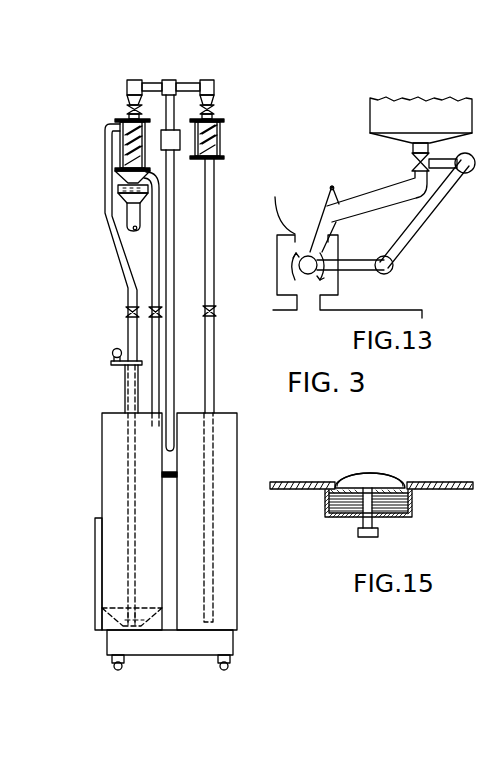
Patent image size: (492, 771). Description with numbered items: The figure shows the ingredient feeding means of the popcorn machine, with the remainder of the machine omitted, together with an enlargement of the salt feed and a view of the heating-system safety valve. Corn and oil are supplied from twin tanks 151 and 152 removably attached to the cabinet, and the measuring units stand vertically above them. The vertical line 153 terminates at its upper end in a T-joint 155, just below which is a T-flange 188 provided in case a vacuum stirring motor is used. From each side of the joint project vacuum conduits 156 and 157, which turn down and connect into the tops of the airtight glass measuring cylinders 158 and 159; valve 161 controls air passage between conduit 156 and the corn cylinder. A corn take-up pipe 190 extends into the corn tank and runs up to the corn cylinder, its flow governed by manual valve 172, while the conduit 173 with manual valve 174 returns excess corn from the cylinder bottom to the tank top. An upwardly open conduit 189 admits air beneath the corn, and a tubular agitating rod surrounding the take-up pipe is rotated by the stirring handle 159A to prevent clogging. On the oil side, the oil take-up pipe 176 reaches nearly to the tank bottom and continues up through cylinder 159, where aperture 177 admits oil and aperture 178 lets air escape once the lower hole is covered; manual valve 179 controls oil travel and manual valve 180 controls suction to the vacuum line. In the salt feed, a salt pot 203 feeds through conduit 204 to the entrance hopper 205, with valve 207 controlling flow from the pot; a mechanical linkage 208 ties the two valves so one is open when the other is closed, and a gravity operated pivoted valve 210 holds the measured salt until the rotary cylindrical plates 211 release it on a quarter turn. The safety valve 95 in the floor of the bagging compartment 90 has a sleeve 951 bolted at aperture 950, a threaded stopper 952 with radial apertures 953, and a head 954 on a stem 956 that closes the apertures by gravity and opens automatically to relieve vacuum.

In FIG. 3, the corn tank 151 is at (122, 548).
In FIG. 3, the oil tank 152 is at (222, 546).
In FIG. 3, the vertical line 153 is at (168, 245).
In FIG. 3, the T-joint 155 is at (173, 84).
In FIG. 3, the vacuum conduit 156 is at (152, 82).
In FIG. 3, the vacuum conduit 157 is at (192, 86).
In FIG. 3, the corn measuring cylinder 158 is at (125, 147).
In FIG. 3, the oil measuring cylinder 159 is at (221, 136).
In FIG. 3, the stirring handle 159A is at (116, 364).
In FIG. 3, the valve 161 is at (128, 103).
In FIG. 3, the manual valve 172 is at (127, 313).
In FIG. 3, the conduit 173 is at (152, 283).
In FIG. 3, the manual valve 174 is at (158, 312).
In FIG. 3, the oil take-up pipe 176 is at (209, 262).
In FIG. 3, the aperture 177 is at (218, 160).
In FIG. 3, the aperture 178 is at (221, 122).
In FIG. 3, the manual valve 179 is at (216, 311).
In FIG. 3, the manual valve 180 is at (211, 108).
In FIG. 3, the T-flange 188 is at (170, 151).
In FIG. 3, the upwardly open conduit 189 is at (100, 539).
In FIG. 3, the corn take-up pipe 190 is at (107, 218).
In FIG. 13, the salt pot 203 is at (427, 108).
In FIG. 13, the conduit 204 is at (370, 193).
In FIG. 13, the entrance hopper 205 is at (266, 236).
In FIG. 13, the valve 207 is at (413, 160).
In FIG. 13, the mechanical linkage 208 is at (428, 270).
In FIG. 13, the gravity operated pivoted valve 210 is at (323, 207).
In FIG. 13, the cylindrical plates 211 is at (333, 259).
In FIG. 15, the bagging compartment 90 is at (297, 482).
In FIG. 15, the valve 95 is at (355, 466).
In FIG. 15, the aperture 950 is at (407, 473).
In FIG. 15, the sleeve 951 is at (418, 494).
In FIG. 15, the stopper 952 is at (410, 514).
In FIG. 15, the radial apertures 953 is at (343, 496).
In FIG. 15, the head 954 is at (368, 474).
In FIG. 15, the stem 956 is at (368, 532).